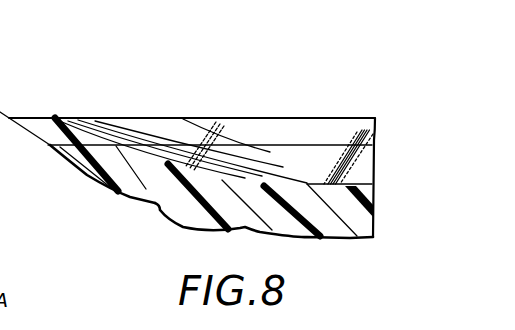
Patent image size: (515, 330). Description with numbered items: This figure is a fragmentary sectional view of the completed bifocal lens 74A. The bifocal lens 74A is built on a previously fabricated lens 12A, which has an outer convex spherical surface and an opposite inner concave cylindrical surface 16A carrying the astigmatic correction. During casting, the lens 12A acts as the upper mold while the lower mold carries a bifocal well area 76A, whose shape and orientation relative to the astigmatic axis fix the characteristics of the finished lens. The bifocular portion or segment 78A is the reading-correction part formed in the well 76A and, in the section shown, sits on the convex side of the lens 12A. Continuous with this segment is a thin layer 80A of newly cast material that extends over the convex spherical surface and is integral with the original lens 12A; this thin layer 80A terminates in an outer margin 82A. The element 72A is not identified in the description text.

The bifocal lens 74A is at (43, 113).
The inner concave cylindrical surface 16A is at (297, 127).
The previously fabricated lens 12A is at (132, 160).
The outer margin 82A is at (36, 143).
The thin layer 80A is at (56, 152).
The bifocular portion 78A is at (180, 221).
The end portion 72A is at (12, 76).
The bifocal well area 76A is at (9, 258).